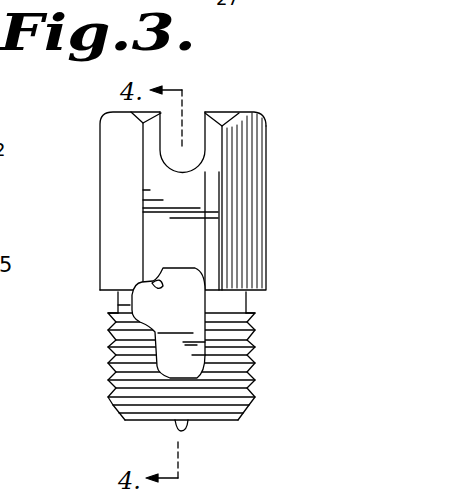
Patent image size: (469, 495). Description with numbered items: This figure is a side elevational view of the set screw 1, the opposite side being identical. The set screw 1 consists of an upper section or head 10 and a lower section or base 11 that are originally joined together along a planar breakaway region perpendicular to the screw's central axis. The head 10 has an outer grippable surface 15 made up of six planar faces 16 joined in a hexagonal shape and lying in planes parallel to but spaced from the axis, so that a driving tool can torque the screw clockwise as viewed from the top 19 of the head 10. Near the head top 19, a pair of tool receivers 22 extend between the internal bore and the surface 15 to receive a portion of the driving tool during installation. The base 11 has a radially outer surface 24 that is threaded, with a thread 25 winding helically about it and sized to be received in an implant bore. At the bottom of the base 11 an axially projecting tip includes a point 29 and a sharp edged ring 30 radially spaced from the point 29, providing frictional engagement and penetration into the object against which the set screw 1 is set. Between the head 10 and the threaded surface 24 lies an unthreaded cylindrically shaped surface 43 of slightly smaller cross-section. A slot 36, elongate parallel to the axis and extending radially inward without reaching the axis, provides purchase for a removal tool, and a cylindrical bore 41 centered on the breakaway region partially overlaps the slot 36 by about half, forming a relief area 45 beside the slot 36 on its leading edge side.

The set screw 1 is at (186, 264).
The head 10 is at (186, 175).
The base 11 is at (254, 387).
The outer grippable surface 15 is at (256, 178).
The planar faces 16 is at (150, 141).
The top 19 is at (242, 111).
The tool receivers 22 is at (204, 128).
The radially outer surface 24 is at (175, 377).
The thread 25 is at (112, 398).
The point 29 is at (186, 426).
The sharp edged ring 30 is at (241, 415).
The slot 36 is at (206, 360).
The bore 41 is at (136, 306).
The cylindrically shaped surface 43 is at (118, 304).
The relief area 45 is at (148, 326).